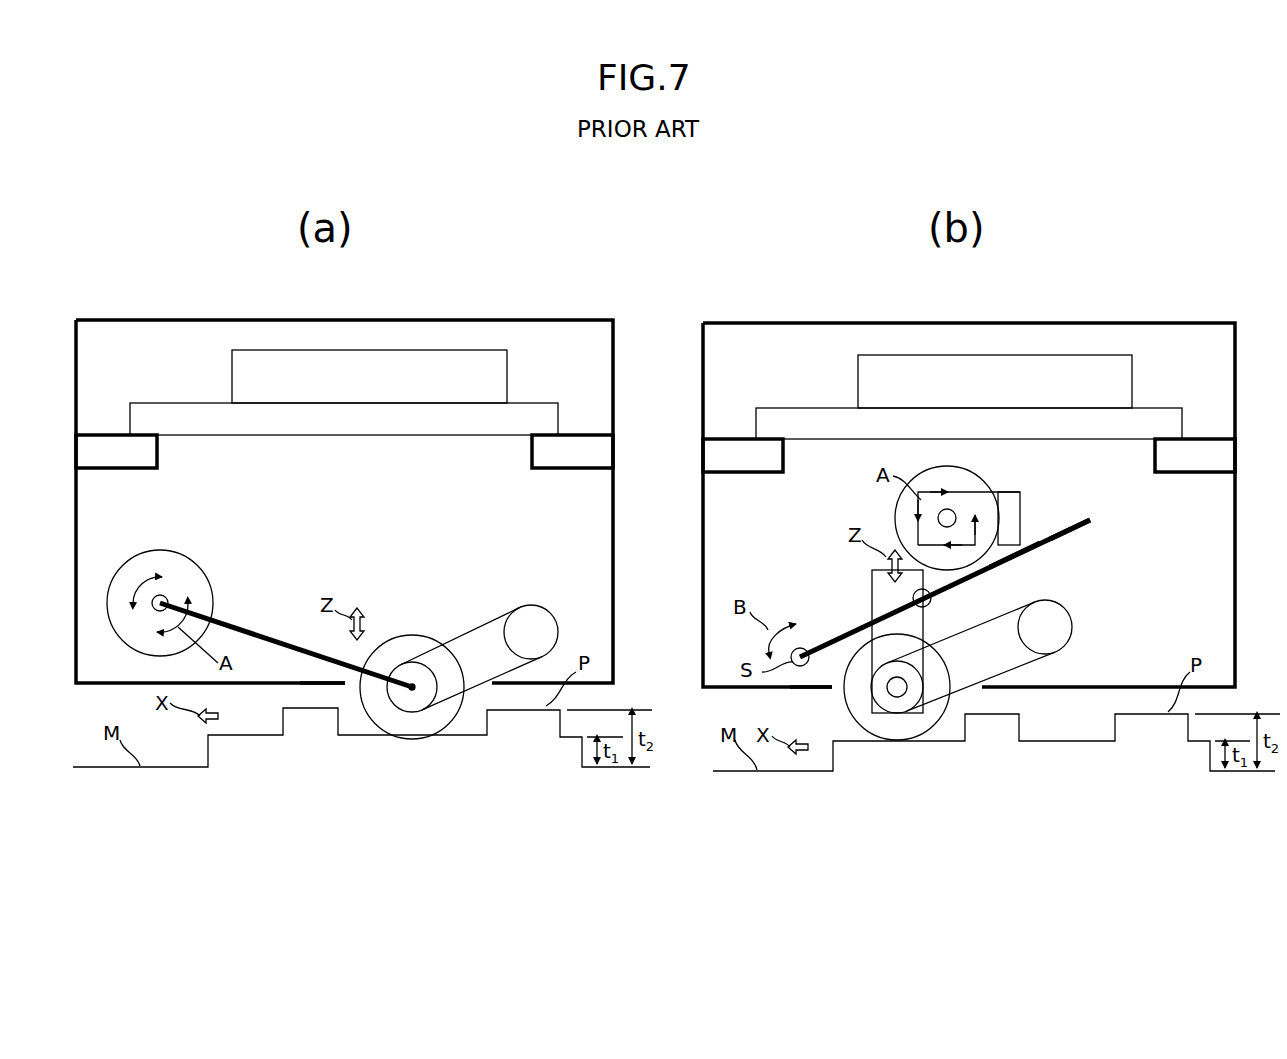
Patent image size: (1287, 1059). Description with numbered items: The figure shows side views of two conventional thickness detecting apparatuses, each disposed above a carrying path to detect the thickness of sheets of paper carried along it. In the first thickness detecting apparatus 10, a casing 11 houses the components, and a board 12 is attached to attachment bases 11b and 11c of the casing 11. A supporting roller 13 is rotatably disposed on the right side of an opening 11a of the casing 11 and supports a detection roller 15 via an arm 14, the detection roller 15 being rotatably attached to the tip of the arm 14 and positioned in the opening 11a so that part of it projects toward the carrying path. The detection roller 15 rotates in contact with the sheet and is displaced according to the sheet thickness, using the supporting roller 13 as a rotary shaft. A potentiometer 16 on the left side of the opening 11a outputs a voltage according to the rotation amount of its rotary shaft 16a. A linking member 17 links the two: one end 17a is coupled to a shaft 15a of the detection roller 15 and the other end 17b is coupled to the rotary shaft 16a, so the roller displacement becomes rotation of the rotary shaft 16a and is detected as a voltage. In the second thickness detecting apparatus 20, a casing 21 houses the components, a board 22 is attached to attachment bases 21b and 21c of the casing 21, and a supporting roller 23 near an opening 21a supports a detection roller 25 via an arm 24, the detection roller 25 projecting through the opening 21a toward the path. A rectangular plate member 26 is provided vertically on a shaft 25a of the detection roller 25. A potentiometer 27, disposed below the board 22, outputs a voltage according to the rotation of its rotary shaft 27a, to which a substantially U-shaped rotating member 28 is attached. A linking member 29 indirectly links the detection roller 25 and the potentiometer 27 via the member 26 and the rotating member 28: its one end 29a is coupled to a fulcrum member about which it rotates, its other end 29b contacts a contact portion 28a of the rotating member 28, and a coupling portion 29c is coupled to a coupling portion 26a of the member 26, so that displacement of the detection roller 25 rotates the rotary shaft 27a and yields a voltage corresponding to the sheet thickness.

The thickness detecting apparatus 10 is at (576, 260).
The casing 11 is at (476, 320).
The opening 11a is at (345, 686).
The attachment base 11b is at (125, 458).
The attachment base 11c is at (560, 462).
The board 12 is at (506, 378).
The supporting roller 13 is at (550, 606).
The arm 14 is at (487, 622).
The detection roller 15 is at (399, 637).
The shaft 15a is at (405, 663).
The potentiometer 16 is at (178, 553).
The rotary shaft 16a is at (132, 645).
The linking member 17 is at (258, 634).
The one end 17a is at (410, 690).
The other end 17b is at (178, 598).
The thickness detecting apparatus 20 is at (1200, 264).
The casing 21 is at (1096, 323).
The opening 21a is at (832, 688).
The attachment base 21b is at (752, 462).
The attachment base 21c is at (1185, 462).
The board 22 is at (1130, 378).
The supporting roller 23 is at (1072, 628).
The arm 24 is at (1010, 670).
The detection roller 25 is at (934, 724).
The shaft 25a is at (890, 692).
The member 26 is at (872, 592).
The coupling portion 26a is at (925, 642).
The potentiometer 27 is at (965, 471).
The rotary shaft 27a is at (956, 512).
The rotating member 28 is at (1015, 500).
The contact portion 28a is at (1040, 545).
The linking member 29 is at (1015, 556).
The one end 29a is at (805, 648).
The other end 29b is at (1065, 532).
The coupling portion 29c is at (930, 603).